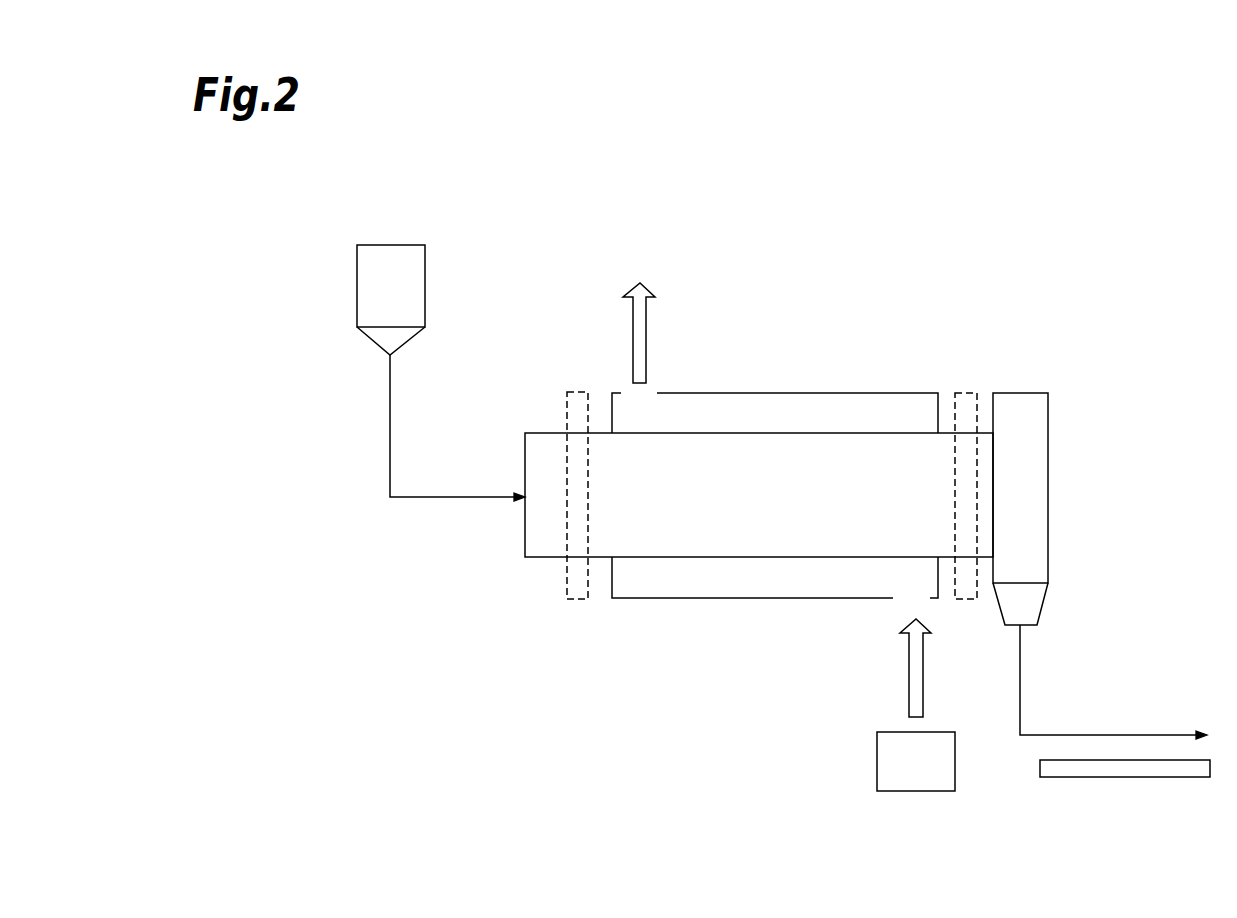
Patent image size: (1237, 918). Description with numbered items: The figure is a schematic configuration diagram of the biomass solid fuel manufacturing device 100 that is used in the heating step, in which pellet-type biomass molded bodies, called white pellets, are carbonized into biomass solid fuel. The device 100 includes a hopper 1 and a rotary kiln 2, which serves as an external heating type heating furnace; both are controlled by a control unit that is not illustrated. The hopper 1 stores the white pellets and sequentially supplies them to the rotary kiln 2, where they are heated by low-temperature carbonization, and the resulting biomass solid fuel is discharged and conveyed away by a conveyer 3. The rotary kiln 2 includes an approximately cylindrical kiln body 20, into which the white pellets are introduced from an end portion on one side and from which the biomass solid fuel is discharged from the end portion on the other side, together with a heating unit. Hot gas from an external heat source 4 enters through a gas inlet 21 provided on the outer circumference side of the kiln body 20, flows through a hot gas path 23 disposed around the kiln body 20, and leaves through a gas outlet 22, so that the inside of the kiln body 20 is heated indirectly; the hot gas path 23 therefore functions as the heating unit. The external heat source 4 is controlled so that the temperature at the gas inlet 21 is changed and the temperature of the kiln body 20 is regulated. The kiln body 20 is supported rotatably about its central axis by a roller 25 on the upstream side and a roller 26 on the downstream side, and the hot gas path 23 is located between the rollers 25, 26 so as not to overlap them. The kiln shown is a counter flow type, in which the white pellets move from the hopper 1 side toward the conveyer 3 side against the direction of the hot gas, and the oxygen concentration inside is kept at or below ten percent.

The biomass solid fuel manufacturing device 100 is at (967, 207).
The hopper 1 is at (357, 288).
The rotary kiln 2 is at (592, 645).
The kiln body 20 is at (695, 557).
The gas inlet 21 is at (907, 598).
The gas outlet 22 is at (640, 397).
The hot gas path 23 is at (768, 598).
The roller 25 is at (562, 586).
The roller 26 is at (966, 393).
The conveyer 3 is at (1075, 780).
The external heat source 4 is at (916, 795).